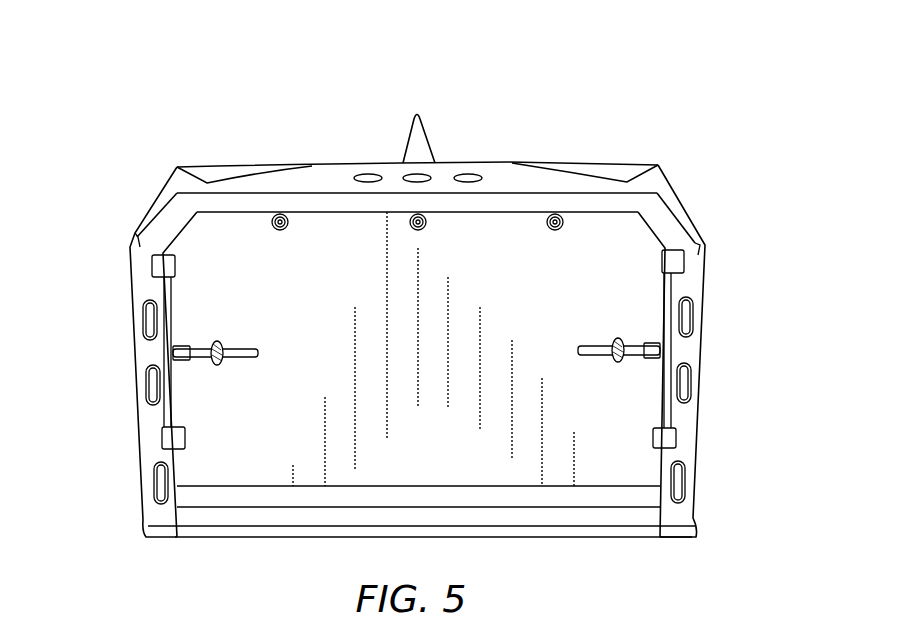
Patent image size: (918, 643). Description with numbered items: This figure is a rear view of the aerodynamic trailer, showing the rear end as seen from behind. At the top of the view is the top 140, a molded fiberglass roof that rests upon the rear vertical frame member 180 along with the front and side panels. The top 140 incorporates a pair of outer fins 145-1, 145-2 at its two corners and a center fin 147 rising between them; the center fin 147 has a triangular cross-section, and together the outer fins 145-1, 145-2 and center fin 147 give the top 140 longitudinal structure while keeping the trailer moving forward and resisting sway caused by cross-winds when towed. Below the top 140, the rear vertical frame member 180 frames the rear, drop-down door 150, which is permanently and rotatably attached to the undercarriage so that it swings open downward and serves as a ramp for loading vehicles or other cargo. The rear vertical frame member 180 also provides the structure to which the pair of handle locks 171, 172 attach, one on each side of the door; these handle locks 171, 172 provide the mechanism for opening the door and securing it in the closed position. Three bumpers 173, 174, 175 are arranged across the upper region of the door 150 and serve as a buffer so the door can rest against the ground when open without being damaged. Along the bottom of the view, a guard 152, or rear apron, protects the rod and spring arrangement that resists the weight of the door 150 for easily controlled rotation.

The top 140 is at (514, 161).
The outer fin 145-1 is at (206, 166).
The outer fin 145-2 is at (674, 170).
The center fin 147 is at (398, 139).
The rear, drop-down door 150 is at (299, 440).
The guard 152 is at (545, 520).
The handle lock 171 is at (204, 367).
The handle lock 172 is at (624, 353).
The bumper 173 is at (269, 227).
The bumper 174 is at (426, 214).
The bumper 175 is at (566, 222).
The rear vertical frame member 180 is at (129, 285).